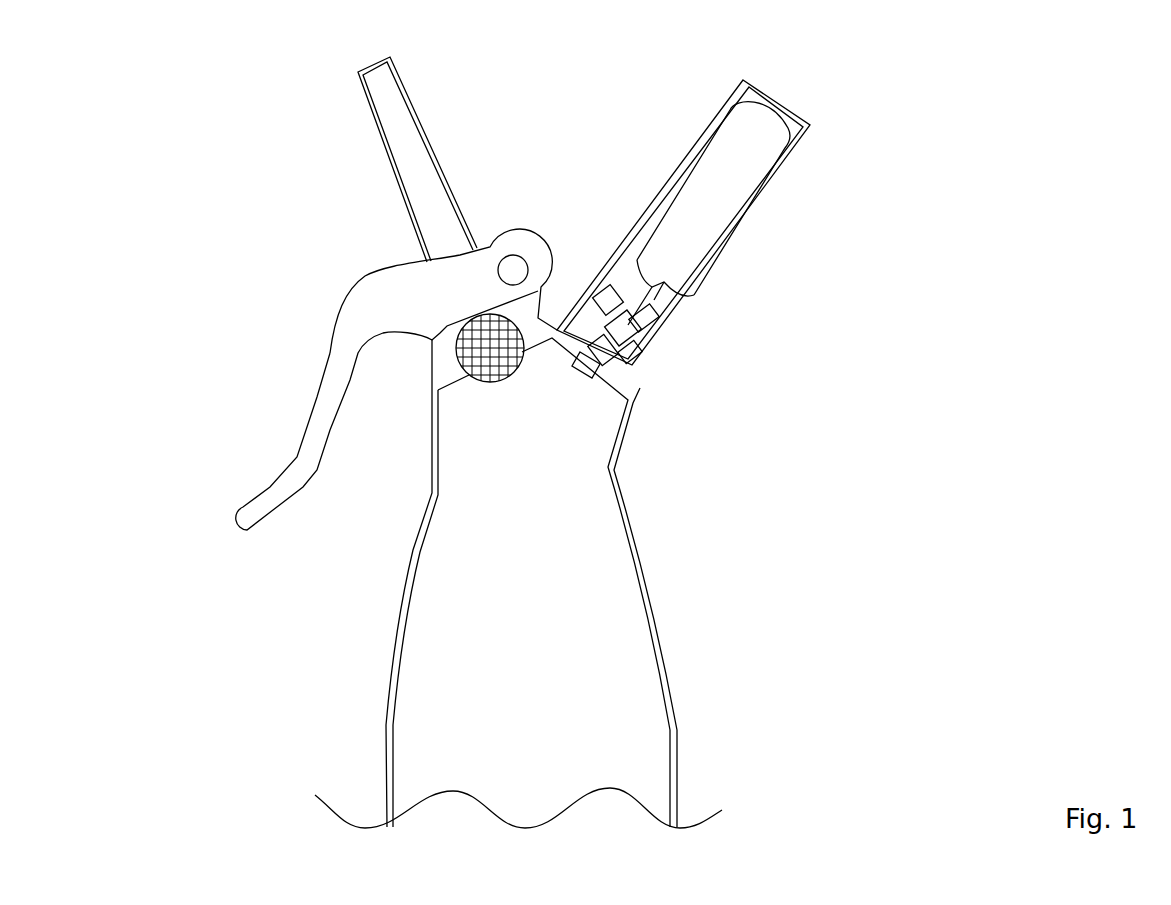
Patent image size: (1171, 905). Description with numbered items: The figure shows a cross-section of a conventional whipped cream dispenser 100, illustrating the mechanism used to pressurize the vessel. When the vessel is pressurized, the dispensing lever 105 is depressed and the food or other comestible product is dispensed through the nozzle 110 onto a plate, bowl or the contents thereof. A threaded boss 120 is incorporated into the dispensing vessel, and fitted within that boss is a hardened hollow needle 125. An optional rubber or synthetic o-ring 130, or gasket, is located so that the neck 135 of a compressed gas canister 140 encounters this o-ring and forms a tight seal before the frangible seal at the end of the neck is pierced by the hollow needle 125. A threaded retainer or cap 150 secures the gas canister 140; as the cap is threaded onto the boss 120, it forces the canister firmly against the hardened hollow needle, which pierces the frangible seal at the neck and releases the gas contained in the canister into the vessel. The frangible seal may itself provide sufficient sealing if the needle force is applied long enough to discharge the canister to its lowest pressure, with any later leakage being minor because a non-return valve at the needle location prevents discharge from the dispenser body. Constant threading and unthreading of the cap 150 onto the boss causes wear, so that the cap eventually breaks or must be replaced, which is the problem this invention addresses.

The whipped cream dispenser 100 is at (633, 752).
The dispensing lever 105 is at (328, 420).
The nozzle 110 is at (425, 178).
The threaded boss 120 is at (625, 358).
The hardened hollow needle 125 is at (592, 367).
The o-ring 130 is at (645, 325).
The neck 135 is at (643, 298).
The compressed gas canister 140 is at (713, 203).
The cap 150 is at (807, 130).